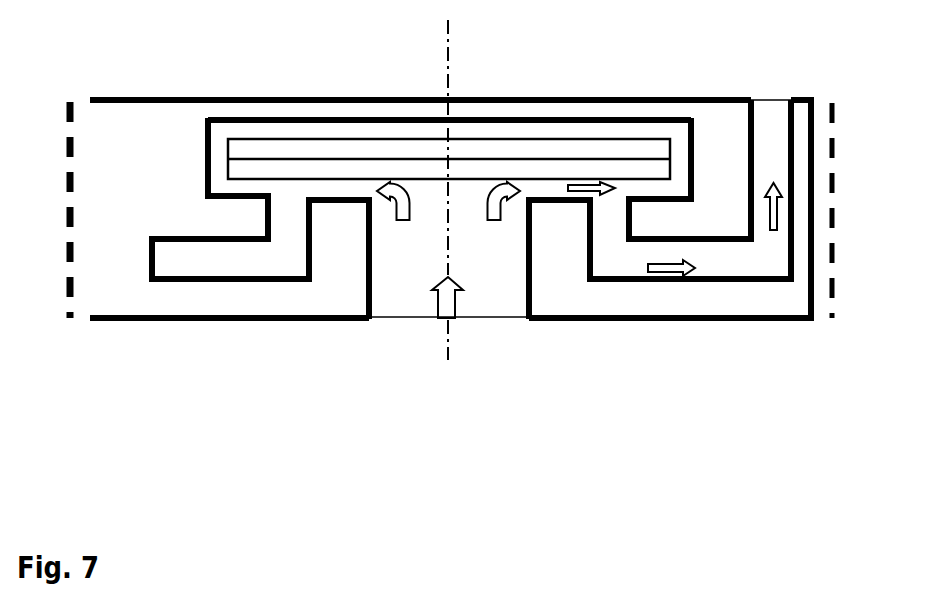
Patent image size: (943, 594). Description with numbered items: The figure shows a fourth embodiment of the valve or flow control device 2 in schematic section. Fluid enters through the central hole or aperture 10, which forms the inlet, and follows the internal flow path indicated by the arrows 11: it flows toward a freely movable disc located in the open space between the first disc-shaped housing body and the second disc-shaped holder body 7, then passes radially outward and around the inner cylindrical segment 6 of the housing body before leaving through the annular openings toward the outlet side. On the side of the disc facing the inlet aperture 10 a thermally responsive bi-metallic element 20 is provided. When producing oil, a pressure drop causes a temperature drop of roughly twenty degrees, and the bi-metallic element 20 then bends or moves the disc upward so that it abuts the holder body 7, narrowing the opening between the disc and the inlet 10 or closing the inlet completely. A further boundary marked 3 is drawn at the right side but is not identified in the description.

The control device 2 is at (185, 345).
The outlet side boundary 3 is at (832, 120).
The inner cylindrical segment 6 is at (548, 258).
The second disc-shaped holder body 7 is at (288, 98).
The central hole or aperture 10 is at (408, 238).
The flow path arrows 11 is at (447, 320).
The bi-metallic element 20 is at (350, 172).